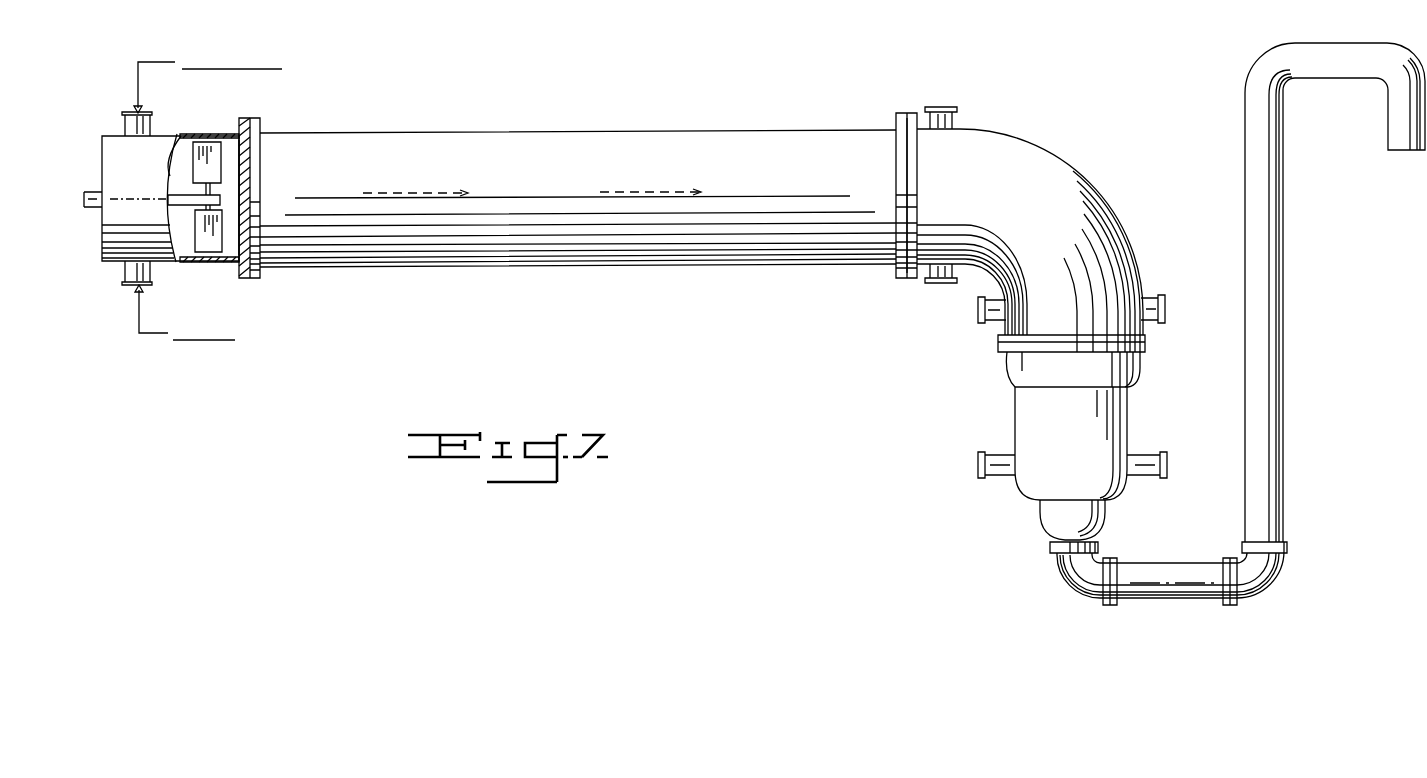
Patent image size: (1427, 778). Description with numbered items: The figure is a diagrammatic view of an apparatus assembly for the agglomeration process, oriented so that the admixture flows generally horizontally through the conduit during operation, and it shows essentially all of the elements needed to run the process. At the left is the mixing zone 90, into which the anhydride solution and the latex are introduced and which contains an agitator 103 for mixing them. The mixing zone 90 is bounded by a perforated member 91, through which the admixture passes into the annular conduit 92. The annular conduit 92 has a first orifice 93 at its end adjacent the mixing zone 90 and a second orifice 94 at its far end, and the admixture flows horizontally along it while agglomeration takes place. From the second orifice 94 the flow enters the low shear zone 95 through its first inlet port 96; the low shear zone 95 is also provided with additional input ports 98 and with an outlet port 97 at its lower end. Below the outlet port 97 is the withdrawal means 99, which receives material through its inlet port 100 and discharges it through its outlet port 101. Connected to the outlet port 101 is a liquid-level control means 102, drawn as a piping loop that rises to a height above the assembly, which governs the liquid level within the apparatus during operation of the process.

The mixing zone 90 is at (102, 230).
The perforated member 91 is at (231, 152).
The annular conduit 92 is at (520, 131).
The first orifice 93 is at (258, 141).
The second orifice 94 is at (895, 165).
The low shear zone 95 is at (1030, 213).
The first inlet port 96 is at (917, 178).
The outlet port 97 is at (1047, 335).
The additional input ports 98 is at (941, 107).
The withdrawal means 99 is at (1077, 440).
The inlet port 100 is at (1022, 355).
The outlet port 101 is at (1060, 537).
The liquid-level control means 102 is at (1200, 603).
The agitator 103 is at (188, 191).